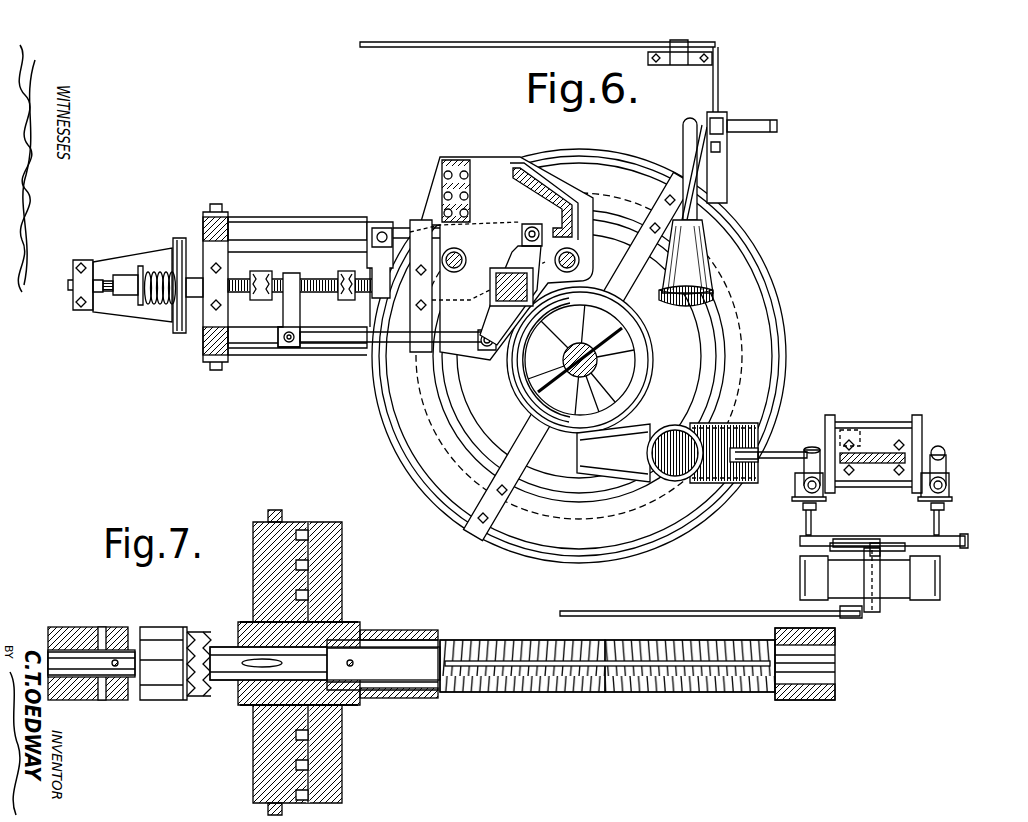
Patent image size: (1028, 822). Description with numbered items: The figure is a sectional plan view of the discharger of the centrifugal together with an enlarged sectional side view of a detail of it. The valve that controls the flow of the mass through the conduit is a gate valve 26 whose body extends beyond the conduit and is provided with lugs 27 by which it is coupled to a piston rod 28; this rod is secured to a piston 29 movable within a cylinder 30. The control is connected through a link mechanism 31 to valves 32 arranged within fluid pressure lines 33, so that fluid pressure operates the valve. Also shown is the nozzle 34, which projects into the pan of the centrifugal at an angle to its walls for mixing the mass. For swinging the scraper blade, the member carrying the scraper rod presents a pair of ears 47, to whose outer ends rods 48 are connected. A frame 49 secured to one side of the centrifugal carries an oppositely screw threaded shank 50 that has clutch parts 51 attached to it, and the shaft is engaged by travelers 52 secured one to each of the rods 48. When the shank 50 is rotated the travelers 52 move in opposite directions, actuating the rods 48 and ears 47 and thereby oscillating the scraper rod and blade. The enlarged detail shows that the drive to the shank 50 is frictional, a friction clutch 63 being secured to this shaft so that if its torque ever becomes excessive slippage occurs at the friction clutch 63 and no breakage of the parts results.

In FIG. 6, the gate valve 26 is at (713, 450).
In FIG. 6, the lugs 27 is at (765, 452).
In FIG. 6, the piston rod 28 is at (790, 459).
In FIG. 6, the piston 29 is at (852, 438).
In FIG. 6, the cylinder 30 is at (905, 430).
In FIG. 6, the link mechanism 31 is at (925, 551).
In FIG. 6, the valves 32 is at (812, 525).
In FIG. 6, the fluid pressure lines 33 is at (946, 478).
In FIG. 6, the nozzle 34 is at (694, 262).
In FIG. 6, the ears 47 is at (494, 350).
In FIG. 6, the rods 48 is at (352, 343).
In FIG. 6, the frame 49 is at (300, 221).
In FIG. 6, the screw threaded shank 50 is at (322, 293).
In FIG. 7, the screw threaded shank 50 is at (510, 660).
In FIG. 6, the clutch parts 51 is at (262, 282).
In FIG. 6, the travelers 52 is at (378, 255).
In FIG. 6, the friction clutch 63 is at (178, 238).
In FIG. 7, the friction clutch 63 is at (308, 526).